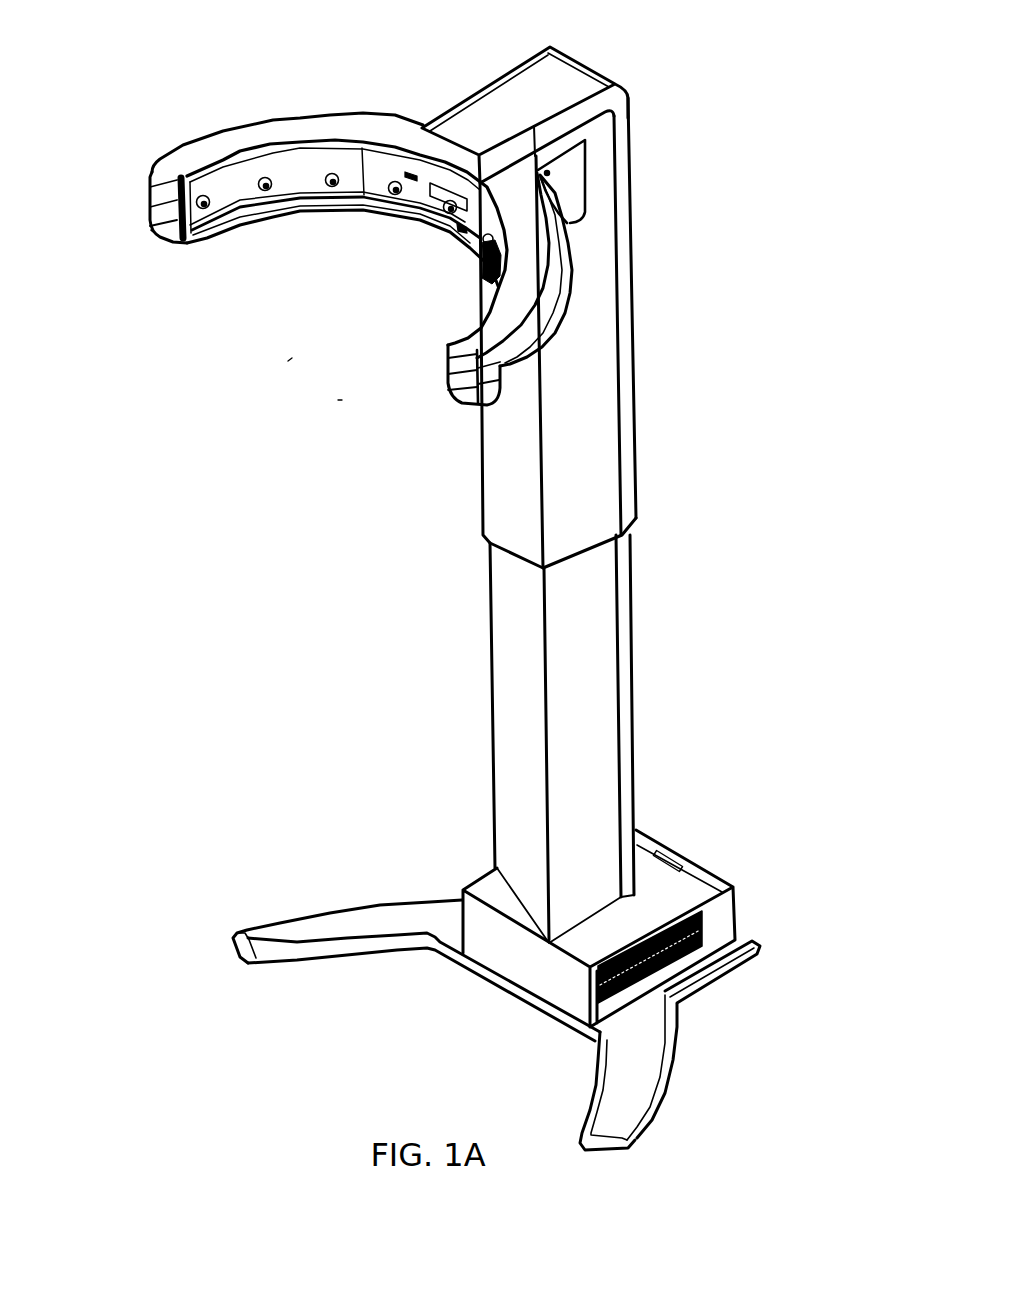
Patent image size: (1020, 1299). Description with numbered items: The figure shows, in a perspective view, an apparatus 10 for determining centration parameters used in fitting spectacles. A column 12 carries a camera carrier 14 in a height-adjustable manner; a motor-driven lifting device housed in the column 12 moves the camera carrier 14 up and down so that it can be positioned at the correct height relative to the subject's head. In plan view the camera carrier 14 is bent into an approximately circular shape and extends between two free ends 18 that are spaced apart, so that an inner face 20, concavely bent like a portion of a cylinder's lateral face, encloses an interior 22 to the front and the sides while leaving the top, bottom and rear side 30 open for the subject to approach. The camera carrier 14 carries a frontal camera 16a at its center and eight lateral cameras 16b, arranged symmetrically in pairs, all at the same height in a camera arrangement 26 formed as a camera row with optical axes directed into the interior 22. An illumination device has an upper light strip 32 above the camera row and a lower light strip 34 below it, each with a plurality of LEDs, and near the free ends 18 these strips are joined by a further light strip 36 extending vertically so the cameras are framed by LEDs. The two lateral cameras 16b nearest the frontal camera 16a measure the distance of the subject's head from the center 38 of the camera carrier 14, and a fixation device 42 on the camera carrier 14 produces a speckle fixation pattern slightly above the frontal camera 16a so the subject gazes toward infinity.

The apparatus 10 is at (687, 388).
The column 12 is at (608, 738).
The camera carrier 14 is at (289, 127).
The frontal camera 16a is at (450, 213).
The lateral cameras 16b is at (265, 192).
The free ends 18 is at (167, 207).
The inner face 20 is at (417, 150).
The interior 22 is at (292, 358).
The camera arrangement 26 is at (158, 245).
The rear side 30 is at (340, 395).
The upper light strip 32 is at (218, 157).
The lower light strip 34 is at (295, 205).
The further light strip 36 is at (175, 247).
The center 38 is at (462, 230).
The fixation device 42 is at (440, 197).